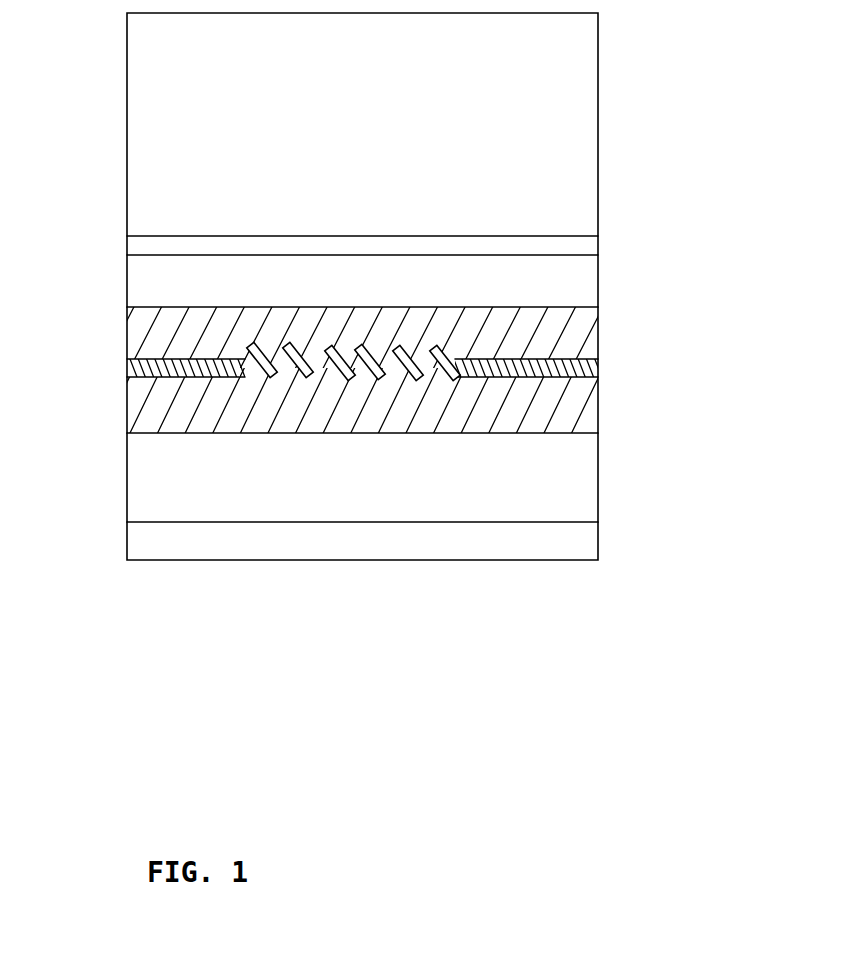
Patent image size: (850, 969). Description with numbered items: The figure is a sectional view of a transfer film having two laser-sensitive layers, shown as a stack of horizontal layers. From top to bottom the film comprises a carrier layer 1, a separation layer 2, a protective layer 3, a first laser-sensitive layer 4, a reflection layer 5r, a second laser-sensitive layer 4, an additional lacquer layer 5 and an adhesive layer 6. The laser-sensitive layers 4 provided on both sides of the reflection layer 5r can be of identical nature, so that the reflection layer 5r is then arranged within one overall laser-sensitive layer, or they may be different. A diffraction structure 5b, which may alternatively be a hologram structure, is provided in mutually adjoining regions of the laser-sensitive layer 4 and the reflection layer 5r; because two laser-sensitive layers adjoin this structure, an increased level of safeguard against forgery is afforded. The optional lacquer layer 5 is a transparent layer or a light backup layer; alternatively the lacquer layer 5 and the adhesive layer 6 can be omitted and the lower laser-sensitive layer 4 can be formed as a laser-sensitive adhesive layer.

The carrier layer 1 is at (545, 143).
The separation layer 2 is at (543, 249).
The protective layer 3 is at (543, 288).
The laser-sensitive layer 4 is at (543, 335).
The additional lacquer layer 5 is at (543, 485).
The reflection layer 5r is at (598, 373).
The diffraction structure 5b is at (325, 377).
The adhesive layer 6 is at (543, 547).